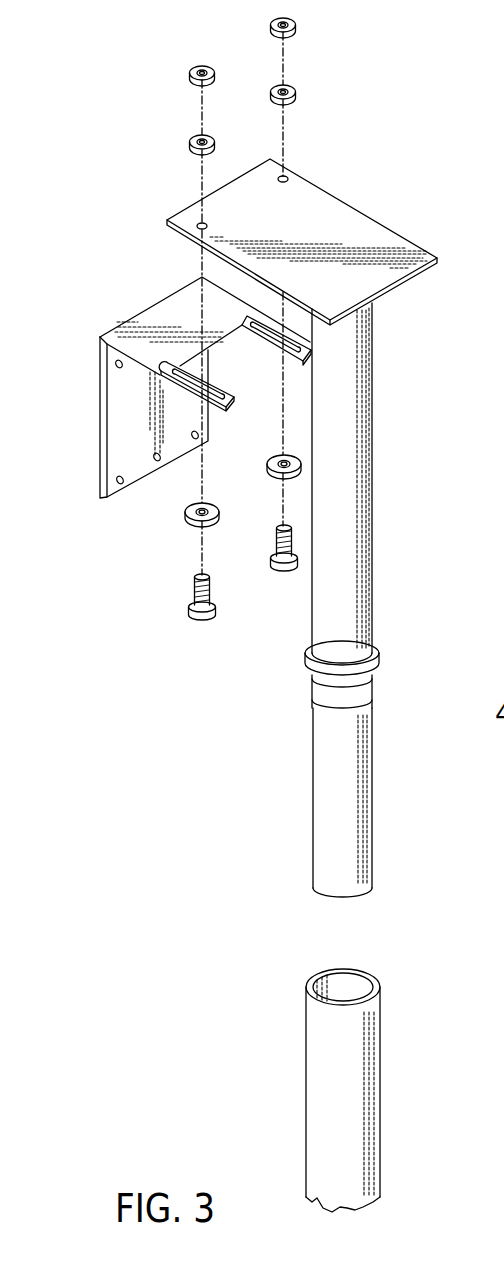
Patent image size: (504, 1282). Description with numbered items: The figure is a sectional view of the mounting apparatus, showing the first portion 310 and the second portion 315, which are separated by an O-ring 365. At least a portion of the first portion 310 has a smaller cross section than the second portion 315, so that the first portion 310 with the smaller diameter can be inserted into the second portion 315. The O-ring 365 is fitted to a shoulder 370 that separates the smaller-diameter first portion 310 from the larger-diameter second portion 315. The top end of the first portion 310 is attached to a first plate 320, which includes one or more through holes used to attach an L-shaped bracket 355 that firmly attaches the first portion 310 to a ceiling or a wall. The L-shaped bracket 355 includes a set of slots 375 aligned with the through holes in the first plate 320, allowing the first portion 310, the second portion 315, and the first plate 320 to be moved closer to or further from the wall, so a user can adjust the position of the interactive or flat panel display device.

The first plate 320 is at (352, 224).
The L-shaped bracket 355 is at (120, 421).
The set of slots 375 is at (228, 389).
The first portion 310 is at (345, 509).
The shoulder 370 is at (378, 655).
The O-ring 365 is at (367, 690).
The second portion 315 is at (347, 783).